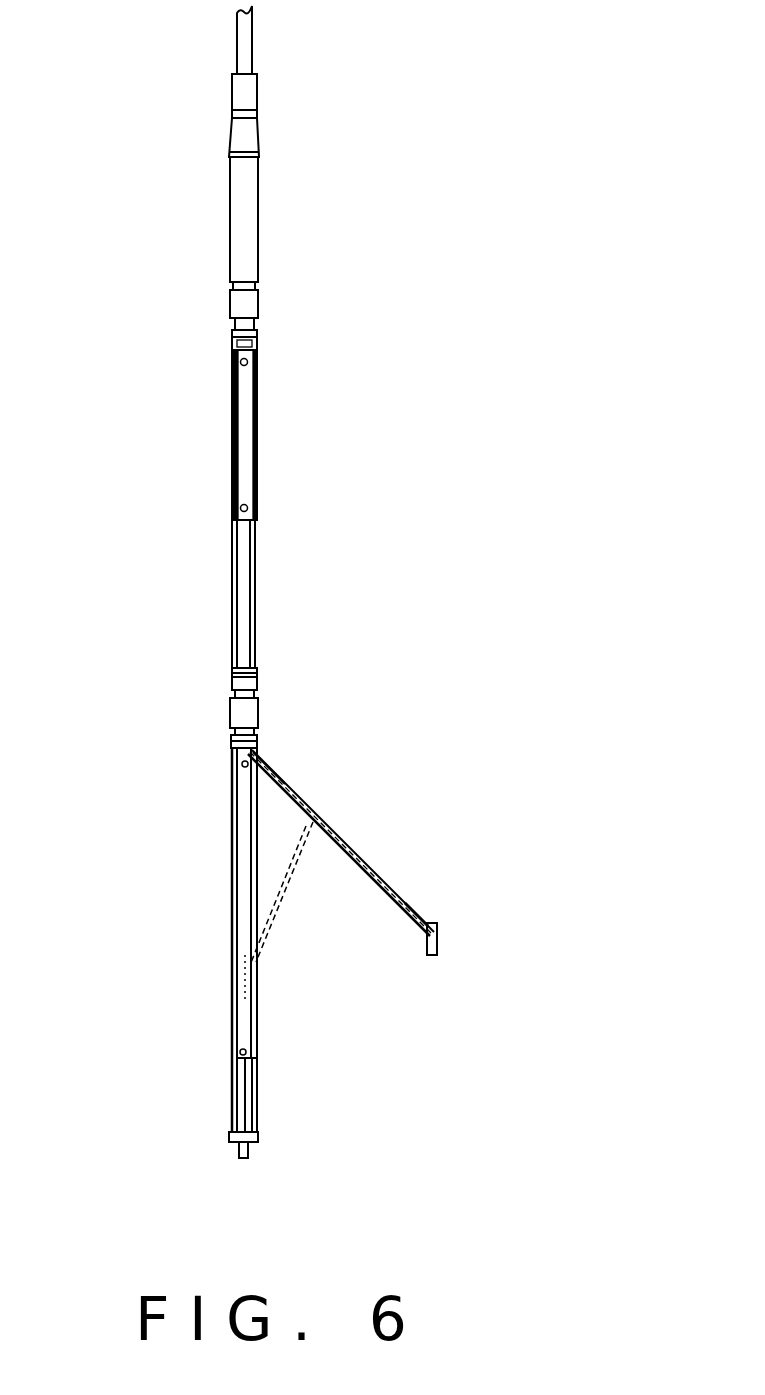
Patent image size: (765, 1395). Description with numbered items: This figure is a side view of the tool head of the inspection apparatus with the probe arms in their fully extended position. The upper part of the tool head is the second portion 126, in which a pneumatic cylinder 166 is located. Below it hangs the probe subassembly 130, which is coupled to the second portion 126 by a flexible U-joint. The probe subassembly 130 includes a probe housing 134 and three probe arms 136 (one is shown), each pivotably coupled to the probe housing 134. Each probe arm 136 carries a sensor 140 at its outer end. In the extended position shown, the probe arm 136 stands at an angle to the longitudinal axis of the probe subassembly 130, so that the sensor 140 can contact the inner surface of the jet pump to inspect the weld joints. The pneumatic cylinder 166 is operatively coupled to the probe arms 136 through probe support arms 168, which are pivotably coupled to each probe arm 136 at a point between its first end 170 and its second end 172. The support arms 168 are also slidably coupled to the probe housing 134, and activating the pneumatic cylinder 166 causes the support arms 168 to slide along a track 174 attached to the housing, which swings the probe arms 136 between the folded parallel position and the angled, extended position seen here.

The second portion 126 is at (247, 377).
The pneumatic cylinder 166 is at (248, 410).
The probe subassembly 130 is at (325, 947).
The probe housing 134 is at (230, 1023).
The probe arm 136 is at (358, 855).
The first end 170 is at (272, 771).
The second end 172 is at (420, 912).
The sensor 140 is at (437, 947).
The probe support arm 168 is at (282, 903).
The track 174 is at (245, 998).